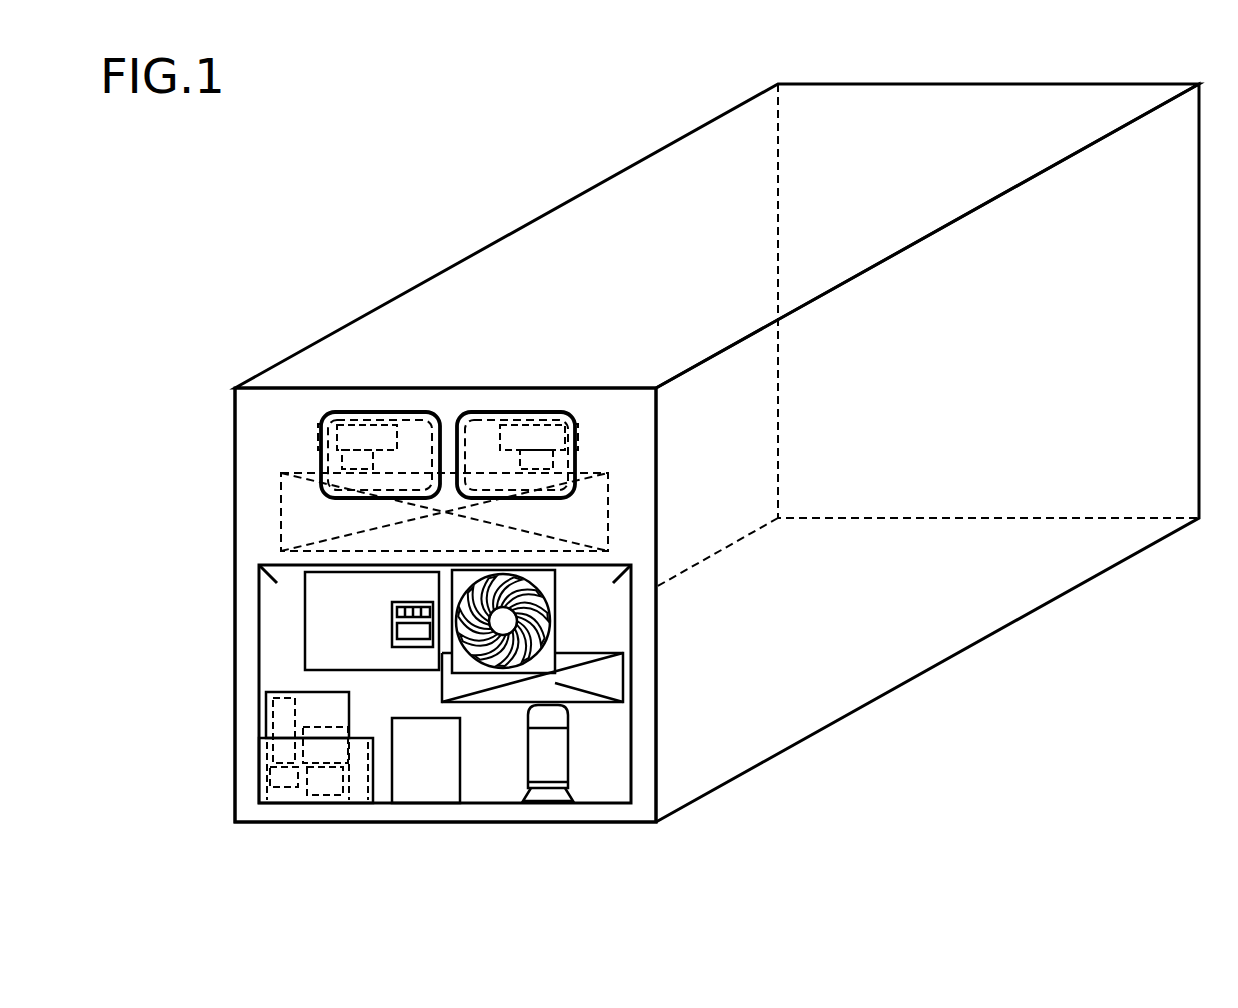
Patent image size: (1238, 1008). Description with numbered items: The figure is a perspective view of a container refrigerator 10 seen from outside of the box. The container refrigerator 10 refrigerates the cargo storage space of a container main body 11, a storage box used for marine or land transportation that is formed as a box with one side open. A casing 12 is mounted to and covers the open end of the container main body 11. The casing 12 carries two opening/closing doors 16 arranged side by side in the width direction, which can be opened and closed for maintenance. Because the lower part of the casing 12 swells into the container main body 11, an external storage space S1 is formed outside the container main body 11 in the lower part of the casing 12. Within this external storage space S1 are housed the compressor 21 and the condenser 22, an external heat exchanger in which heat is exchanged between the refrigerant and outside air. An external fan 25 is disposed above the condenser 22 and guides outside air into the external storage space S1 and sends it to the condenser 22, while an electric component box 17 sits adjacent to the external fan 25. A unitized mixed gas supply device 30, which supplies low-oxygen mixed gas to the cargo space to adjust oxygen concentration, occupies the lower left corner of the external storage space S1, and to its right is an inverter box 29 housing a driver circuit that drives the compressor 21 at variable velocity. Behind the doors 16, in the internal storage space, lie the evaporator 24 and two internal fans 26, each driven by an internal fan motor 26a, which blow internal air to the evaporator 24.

The container refrigerator 10 is at (268, 335).
The container main body 11 is at (500, 240).
The casing 12 is at (233, 505).
The opening/closing door 16 is at (382, 412).
The electric component box 17 is at (308, 640).
The compressor 21 is at (528, 746).
The condenser 22 is at (623, 680).
The evaporator 24 is at (608, 510).
The external fan 25 is at (555, 615).
The internal fan 26 is at (318, 440).
The internal fan motor 26a is at (318, 462).
The inverter box 29 is at (463, 774).
The mixed gas supply device 30 is at (352, 718).
The external storage space S1 is at (285, 672).